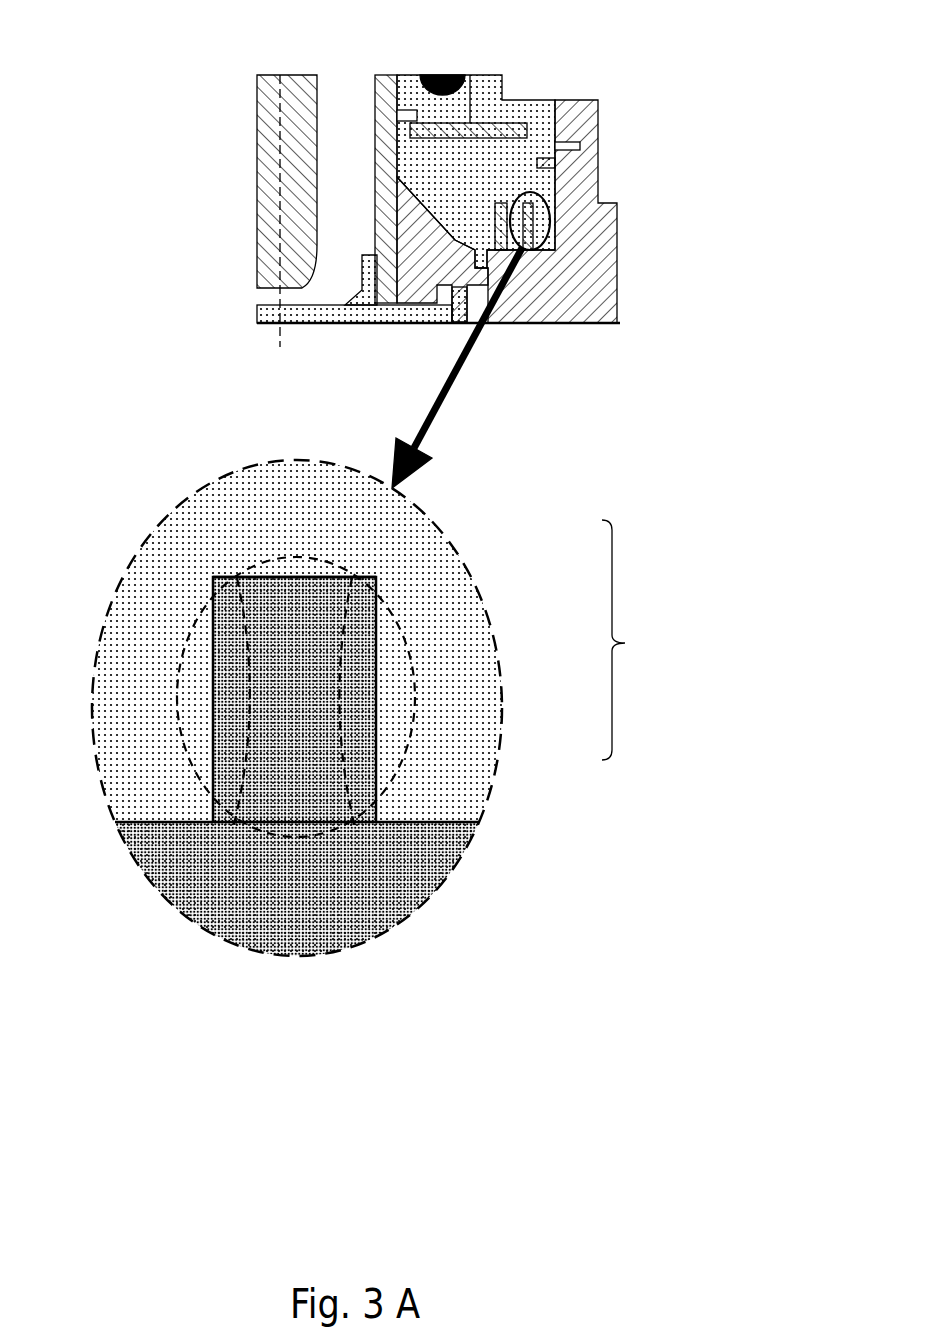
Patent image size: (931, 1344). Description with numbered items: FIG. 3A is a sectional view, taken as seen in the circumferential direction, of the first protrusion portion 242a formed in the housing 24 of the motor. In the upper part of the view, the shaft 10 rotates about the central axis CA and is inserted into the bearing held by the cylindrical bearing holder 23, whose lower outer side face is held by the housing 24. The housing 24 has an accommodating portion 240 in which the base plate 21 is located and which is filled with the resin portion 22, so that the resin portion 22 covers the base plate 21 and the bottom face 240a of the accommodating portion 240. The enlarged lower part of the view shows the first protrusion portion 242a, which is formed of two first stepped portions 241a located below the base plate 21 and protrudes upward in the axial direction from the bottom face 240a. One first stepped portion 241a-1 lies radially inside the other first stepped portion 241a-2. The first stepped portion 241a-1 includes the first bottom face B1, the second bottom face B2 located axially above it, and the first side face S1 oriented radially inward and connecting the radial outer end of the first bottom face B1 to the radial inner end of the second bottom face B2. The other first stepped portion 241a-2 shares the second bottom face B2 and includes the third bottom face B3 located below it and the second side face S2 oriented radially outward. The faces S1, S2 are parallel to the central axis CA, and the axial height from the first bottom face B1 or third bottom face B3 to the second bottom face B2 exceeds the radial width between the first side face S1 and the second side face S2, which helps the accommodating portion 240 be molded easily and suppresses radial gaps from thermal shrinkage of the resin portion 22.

The shaft 10 is at (248, 171).
The base plate 21 is at (425, 73).
The resin portion 22 is at (297, 684).
The bearing holder 23 is at (334, 198).
The housing 24 is at (399, 273).
The accommodating portion 240 is at (546, 294).
The bottom face 240a is at (428, 436).
The first stepped portion 241a is at (472, 138).
The one first stepped portion 241a-1 is at (193, 898).
The other first stepped portion 241a-2 is at (443, 889).
The first protrusion portion 242a is at (294, 606).
The central axis CA is at (236, 223).
The first side face S1 is at (252, 657).
The second side face S2 is at (388, 697).
The first bottom face B1 is at (355, 742).
The second bottom face B2 is at (404, 549).
The third bottom face B3 is at (485, 770).